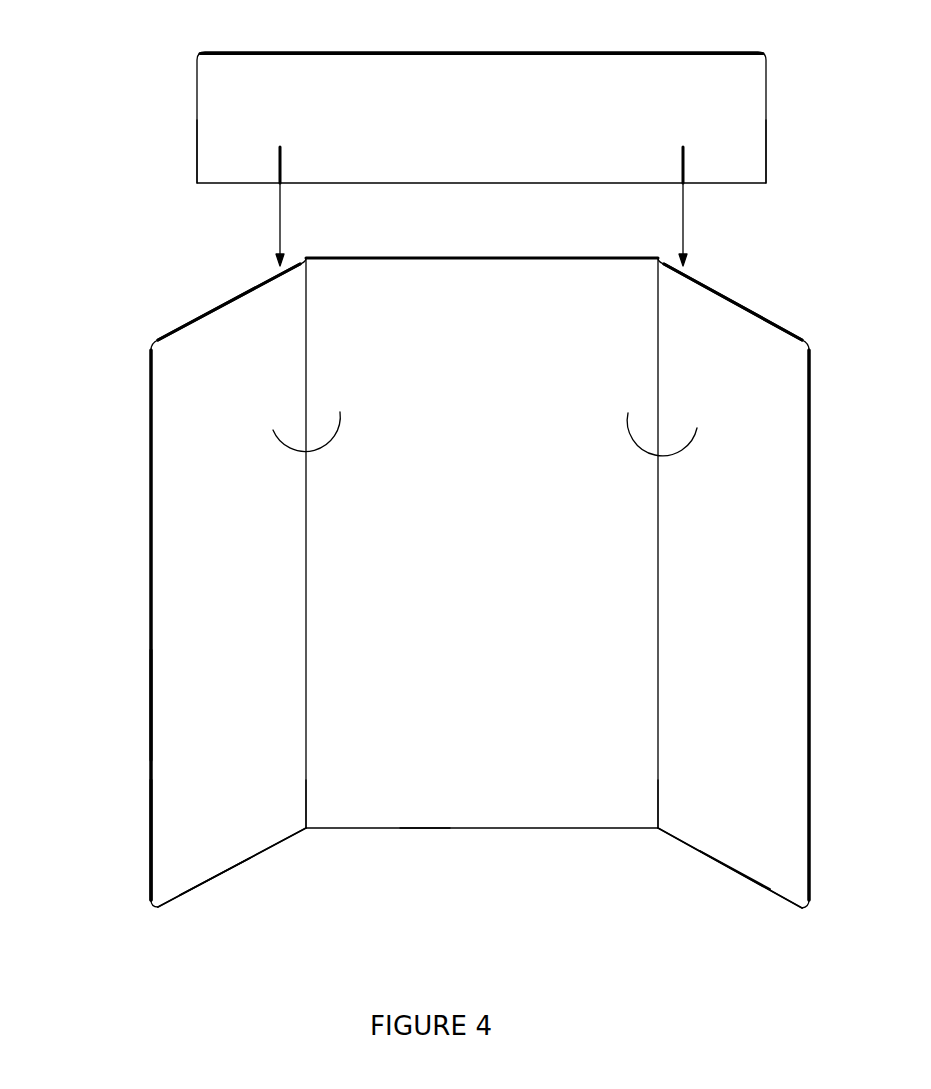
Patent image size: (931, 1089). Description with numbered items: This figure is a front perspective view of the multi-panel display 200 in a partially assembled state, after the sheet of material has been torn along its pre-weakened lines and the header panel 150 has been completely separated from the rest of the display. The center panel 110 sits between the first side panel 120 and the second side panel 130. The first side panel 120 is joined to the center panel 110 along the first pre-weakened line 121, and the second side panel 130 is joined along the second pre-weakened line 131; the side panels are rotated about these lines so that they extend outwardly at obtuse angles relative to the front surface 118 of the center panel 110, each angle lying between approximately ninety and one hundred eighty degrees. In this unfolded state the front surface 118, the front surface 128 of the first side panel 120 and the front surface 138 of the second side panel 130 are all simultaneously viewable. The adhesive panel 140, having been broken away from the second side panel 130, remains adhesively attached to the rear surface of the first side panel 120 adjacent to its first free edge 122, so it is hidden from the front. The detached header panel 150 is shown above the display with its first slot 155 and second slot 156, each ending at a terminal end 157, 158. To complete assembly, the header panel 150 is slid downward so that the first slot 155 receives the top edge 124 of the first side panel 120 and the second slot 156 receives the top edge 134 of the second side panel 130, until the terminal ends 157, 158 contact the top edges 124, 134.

The center panel 110 is at (497, 563).
The front surface of the center panel 118 is at (423, 775).
The first side panel 120 is at (254, 563).
The first pre-weakened line 121 is at (305, 790).
The first free edge 122 is at (150, 822).
The top edge 124 is at (213, 308).
The front surface of the first side panel 128 is at (213, 832).
The second side panel 130 is at (734, 563).
The second pre-weakened line 131 is at (658, 788).
The top edge 134 is at (752, 308).
The front surface of the second side panel 138 is at (748, 848).
The adhesive panel 140 is at (150, 720).
The header panel 150 is at (497, 145).
The first slot 155 is at (279, 166).
The second slot 156 is at (684, 166).
The terminal end of the first slot 157 is at (280, 147).
The terminal end of the second slot 158 is at (683, 147).
The multi-panel display 200 is at (148, 311).